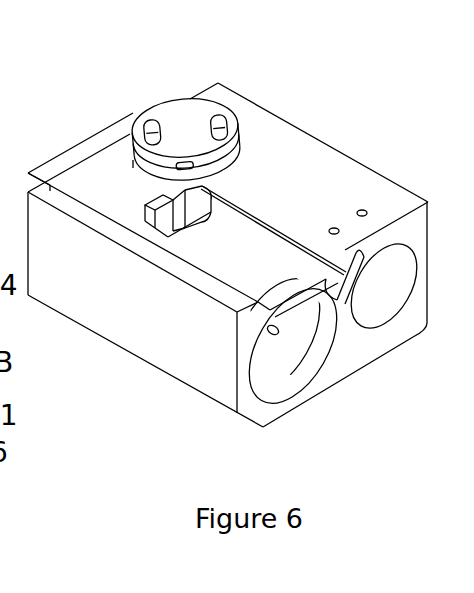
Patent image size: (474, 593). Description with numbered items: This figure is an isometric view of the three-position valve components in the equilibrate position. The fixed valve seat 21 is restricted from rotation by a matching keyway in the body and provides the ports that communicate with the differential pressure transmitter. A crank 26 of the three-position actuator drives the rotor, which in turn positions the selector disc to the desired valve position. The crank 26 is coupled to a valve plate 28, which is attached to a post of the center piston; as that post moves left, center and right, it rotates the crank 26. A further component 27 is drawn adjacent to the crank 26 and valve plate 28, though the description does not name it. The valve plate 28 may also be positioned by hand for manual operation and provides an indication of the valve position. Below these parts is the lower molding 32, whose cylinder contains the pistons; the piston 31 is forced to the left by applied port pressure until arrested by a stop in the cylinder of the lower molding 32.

The valve seat 21 is at (188, 115).
The crank 26 is at (145, 205).
The bracket 27 is at (150, 222).
The valve plate 28 is at (133, 165).
The piston 31 is at (277, 353).
The lower molding 32 is at (132, 357).